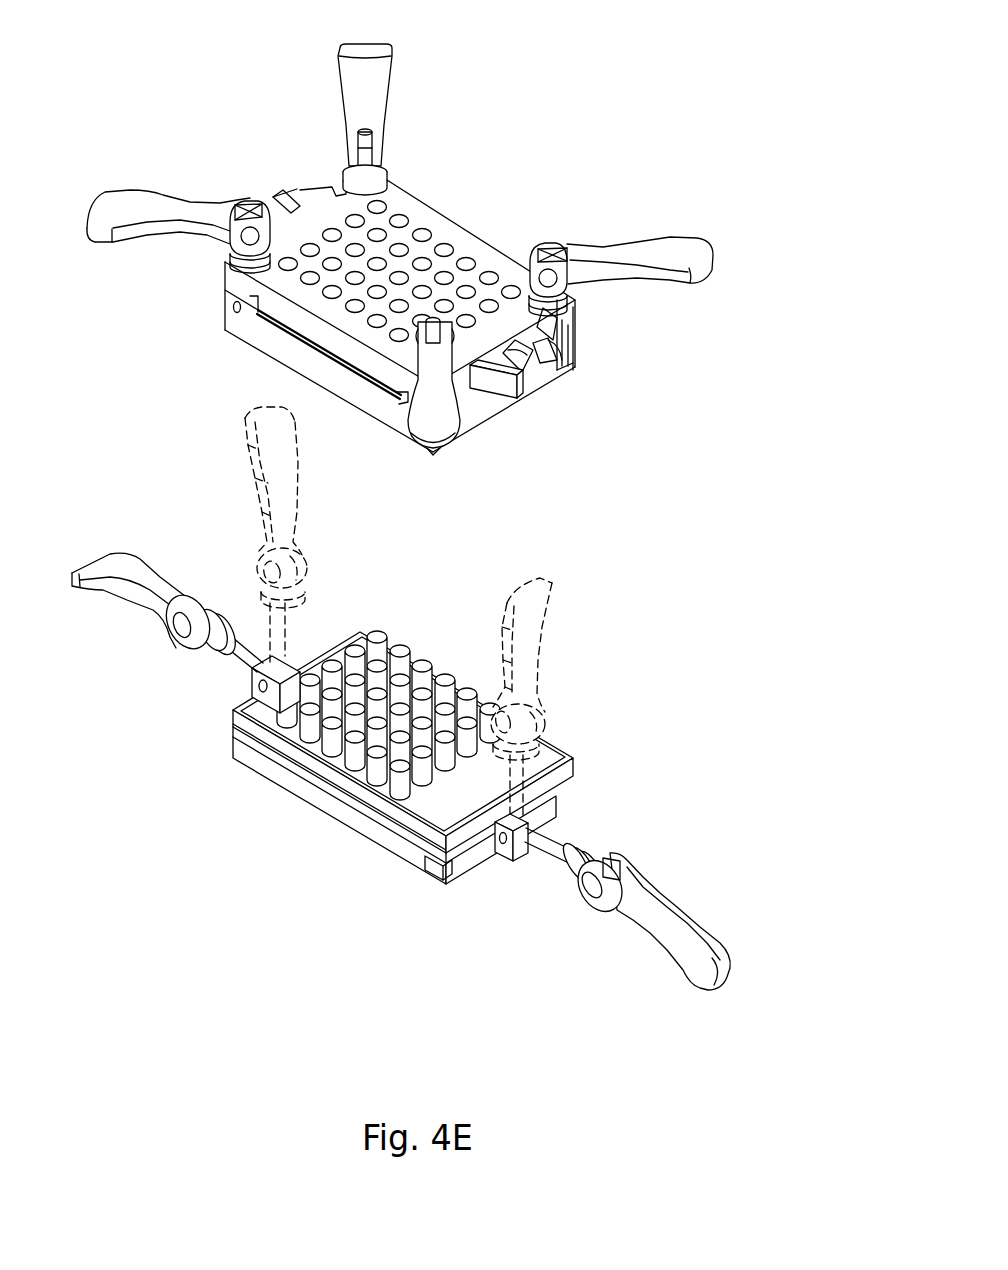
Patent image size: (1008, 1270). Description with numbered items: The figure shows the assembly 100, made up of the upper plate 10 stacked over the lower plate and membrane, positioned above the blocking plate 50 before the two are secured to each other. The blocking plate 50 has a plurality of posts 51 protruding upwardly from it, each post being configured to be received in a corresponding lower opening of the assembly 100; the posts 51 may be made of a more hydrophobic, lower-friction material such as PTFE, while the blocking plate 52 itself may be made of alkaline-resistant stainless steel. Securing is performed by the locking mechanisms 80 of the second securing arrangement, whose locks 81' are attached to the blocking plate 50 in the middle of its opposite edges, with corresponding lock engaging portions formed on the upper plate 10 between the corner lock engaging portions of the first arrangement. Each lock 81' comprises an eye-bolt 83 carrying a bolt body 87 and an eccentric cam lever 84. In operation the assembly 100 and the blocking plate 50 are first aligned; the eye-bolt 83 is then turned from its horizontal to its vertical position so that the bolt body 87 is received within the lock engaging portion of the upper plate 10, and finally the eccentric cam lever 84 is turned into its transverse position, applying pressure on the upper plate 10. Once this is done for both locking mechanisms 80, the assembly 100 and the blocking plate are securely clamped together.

The assembly 100 is at (448, 436).
The upper plate 10 is at (430, 218).
The locking mechanisms 80 is at (591, 532).
The blocking plate 50 is at (462, 698).
The posts 51 is at (287, 716).
The blocking plate 52 is at (365, 832).
The bolt body 87 is at (550, 848).
The eye-bolt 83 is at (560, 862).
The eccentric cam lever 84 is at (712, 958).
The lock 81' is at (649, 909).